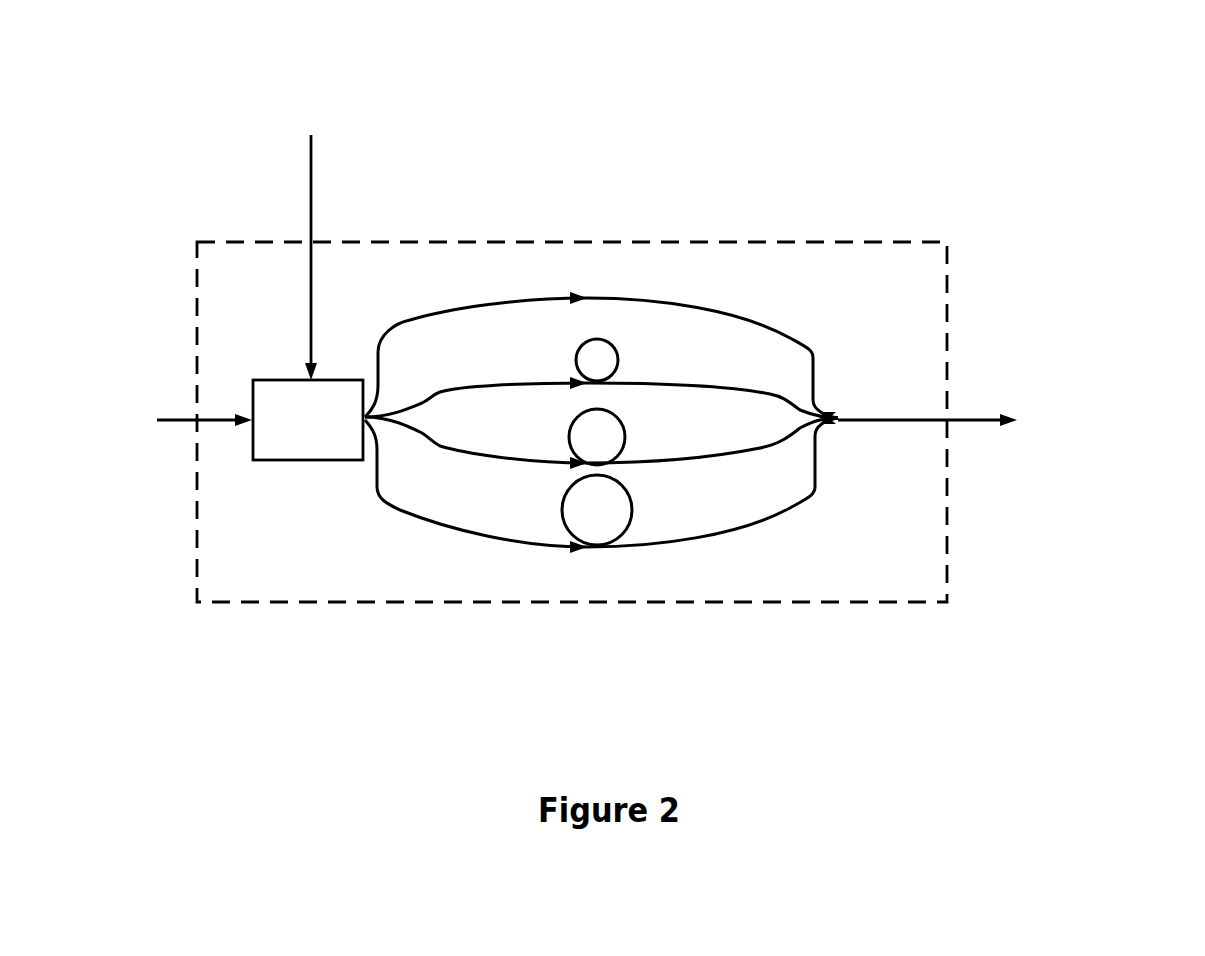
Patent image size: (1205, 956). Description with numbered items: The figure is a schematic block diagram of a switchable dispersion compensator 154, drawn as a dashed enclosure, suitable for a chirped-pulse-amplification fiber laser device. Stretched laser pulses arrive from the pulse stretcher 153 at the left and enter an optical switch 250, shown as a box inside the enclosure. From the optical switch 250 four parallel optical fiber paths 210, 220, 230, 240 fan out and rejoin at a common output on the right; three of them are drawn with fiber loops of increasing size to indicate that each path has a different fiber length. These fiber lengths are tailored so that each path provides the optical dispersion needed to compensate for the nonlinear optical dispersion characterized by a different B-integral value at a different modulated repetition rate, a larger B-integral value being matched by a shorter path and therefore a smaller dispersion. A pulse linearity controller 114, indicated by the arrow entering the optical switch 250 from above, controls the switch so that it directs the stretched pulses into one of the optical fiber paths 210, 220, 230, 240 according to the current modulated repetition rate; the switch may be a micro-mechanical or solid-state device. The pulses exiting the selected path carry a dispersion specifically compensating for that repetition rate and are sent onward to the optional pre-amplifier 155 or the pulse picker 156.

The pulse linearity controller 114 is at (309, 218).
The pulse stretcher 153 is at (151, 419).
The switchable dispersion compensator 154 is at (880, 230).
The pre-amplifier 155 is at (1011, 419).
The pulse picker 156 is at (1011, 419).
The optical fiber path 210 is at (628, 286).
The optical fiber path 220 is at (795, 384).
The optical fiber path 230 is at (780, 452).
The optical fiber path 240 is at (658, 560).
The optical switch 250 is at (315, 440).